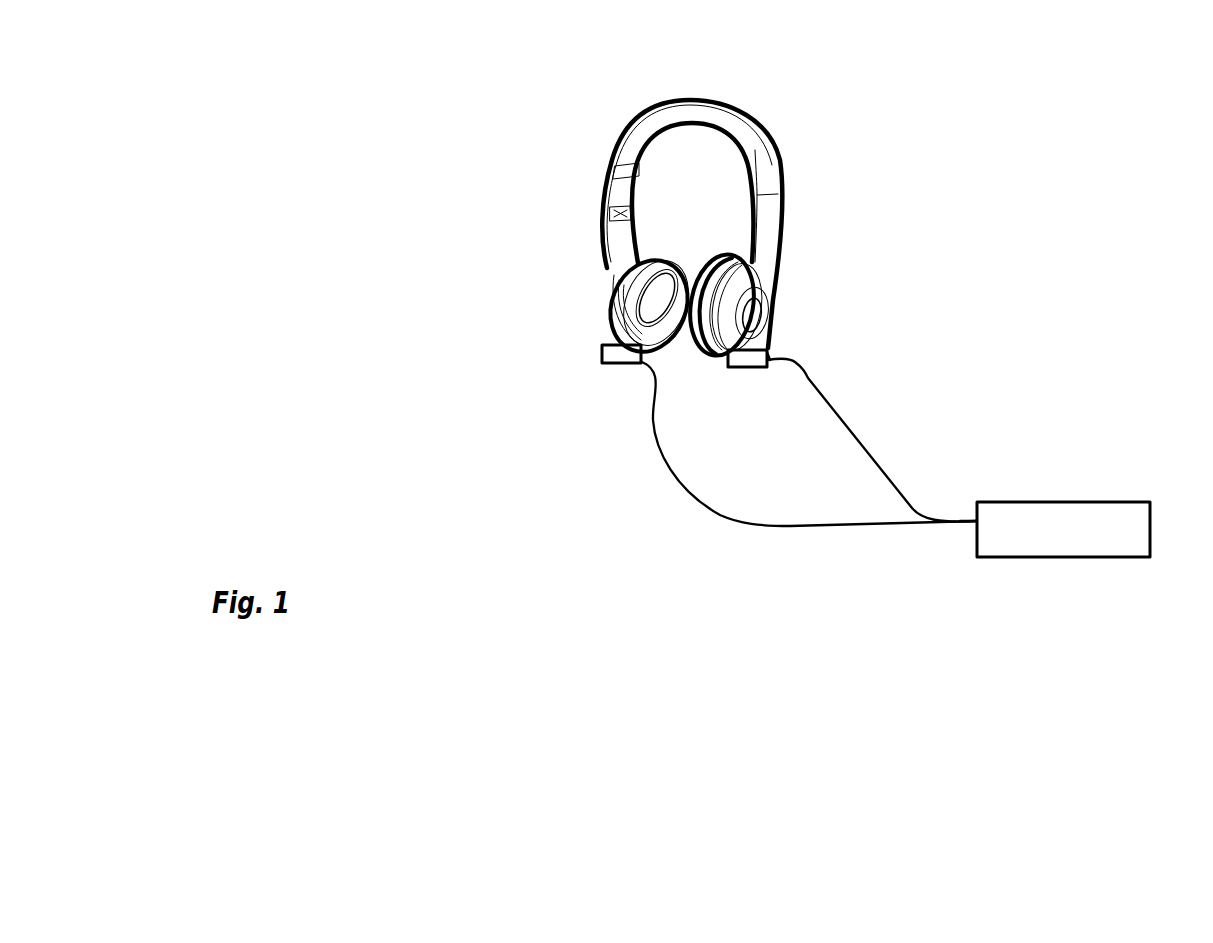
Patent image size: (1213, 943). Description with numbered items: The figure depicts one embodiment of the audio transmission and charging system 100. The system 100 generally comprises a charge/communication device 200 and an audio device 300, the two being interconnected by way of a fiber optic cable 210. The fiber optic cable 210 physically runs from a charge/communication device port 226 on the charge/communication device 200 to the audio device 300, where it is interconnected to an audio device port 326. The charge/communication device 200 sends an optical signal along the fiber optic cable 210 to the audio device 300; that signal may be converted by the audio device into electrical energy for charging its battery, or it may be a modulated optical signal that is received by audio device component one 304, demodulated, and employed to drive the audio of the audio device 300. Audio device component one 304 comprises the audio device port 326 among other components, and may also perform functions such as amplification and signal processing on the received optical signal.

The audio transmission and charging system 100 is at (478, 108).
The charge/communication device 200 is at (1065, 502).
The fiber optic cable 210 is at (668, 467).
The charge/communication device port 226 is at (975, 517).
The audio device 300 is at (772, 125).
The audio device component one 304 is at (602, 353).
The audio device port 326 is at (768, 355).